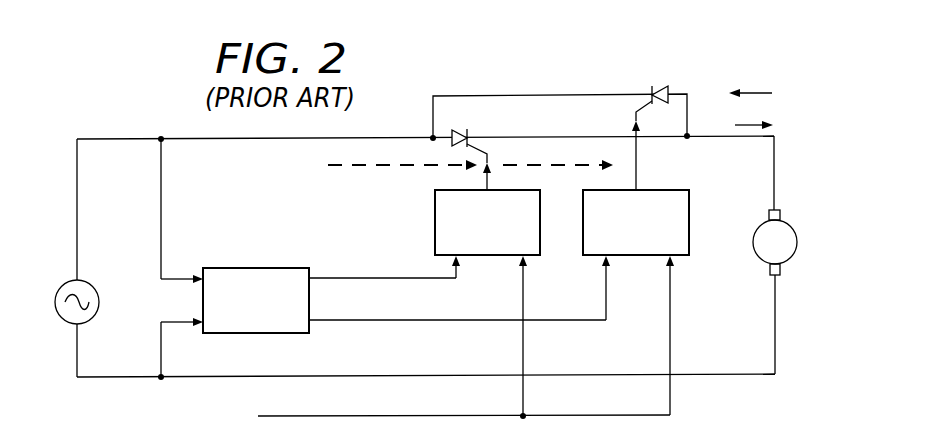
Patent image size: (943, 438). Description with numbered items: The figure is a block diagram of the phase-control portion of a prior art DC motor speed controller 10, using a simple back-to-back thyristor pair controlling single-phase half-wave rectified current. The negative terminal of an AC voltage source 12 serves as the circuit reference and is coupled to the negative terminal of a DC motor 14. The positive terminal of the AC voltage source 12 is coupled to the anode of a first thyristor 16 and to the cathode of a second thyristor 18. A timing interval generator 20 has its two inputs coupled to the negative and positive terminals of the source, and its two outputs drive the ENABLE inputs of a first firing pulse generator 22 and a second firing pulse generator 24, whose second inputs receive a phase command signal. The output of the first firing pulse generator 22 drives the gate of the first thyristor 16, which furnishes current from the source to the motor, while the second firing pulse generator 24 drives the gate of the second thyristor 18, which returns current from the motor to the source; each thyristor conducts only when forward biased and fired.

The prior art motor speed controller 10 is at (116, 92).
The AC voltage source 12 is at (99, 301).
The DC motor 14 is at (789, 258).
The first thyristor 16 is at (467, 136).
The second thyristor 18 is at (651, 92).
The timing interval generator 20 is at (243, 310).
The first firing pulse generator 22 is at (474, 233).
The second firing pulse generator 24 is at (623, 233).